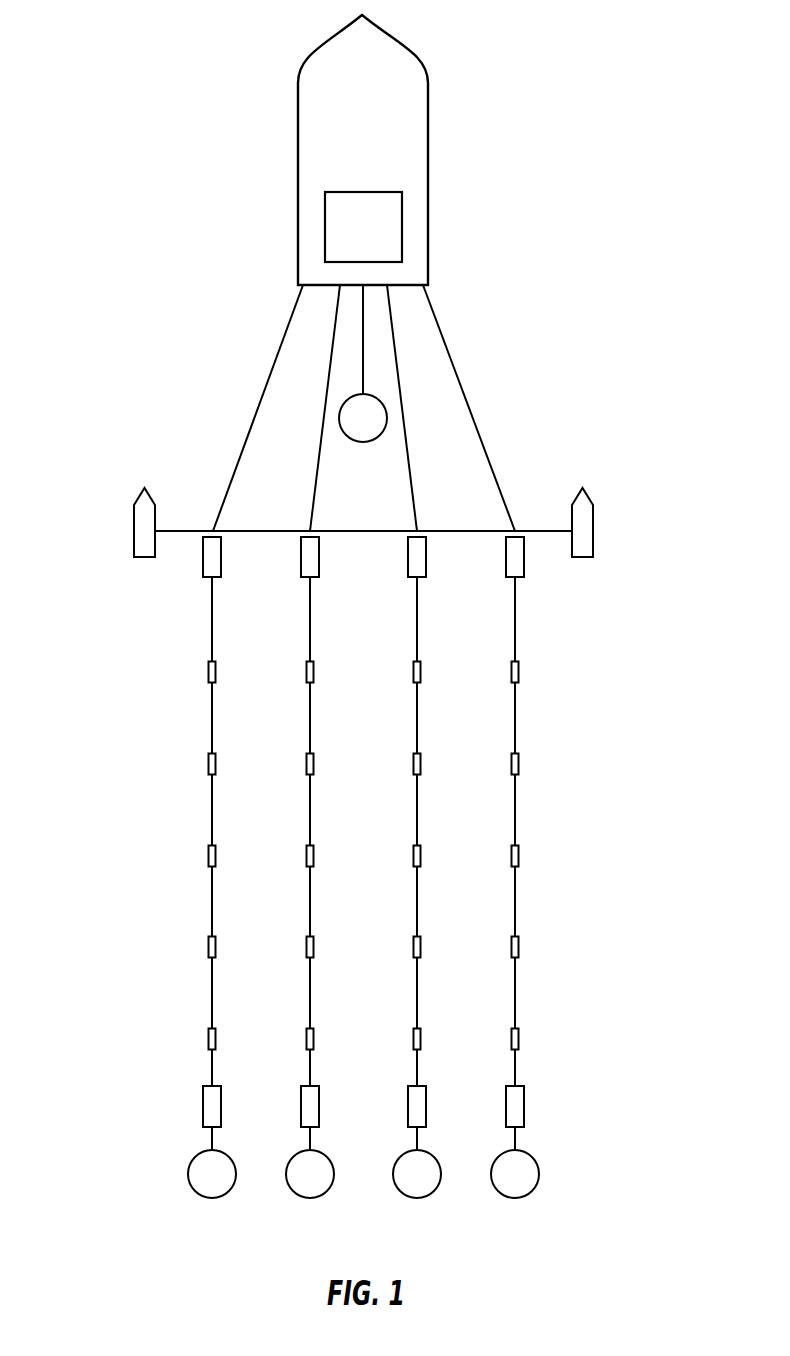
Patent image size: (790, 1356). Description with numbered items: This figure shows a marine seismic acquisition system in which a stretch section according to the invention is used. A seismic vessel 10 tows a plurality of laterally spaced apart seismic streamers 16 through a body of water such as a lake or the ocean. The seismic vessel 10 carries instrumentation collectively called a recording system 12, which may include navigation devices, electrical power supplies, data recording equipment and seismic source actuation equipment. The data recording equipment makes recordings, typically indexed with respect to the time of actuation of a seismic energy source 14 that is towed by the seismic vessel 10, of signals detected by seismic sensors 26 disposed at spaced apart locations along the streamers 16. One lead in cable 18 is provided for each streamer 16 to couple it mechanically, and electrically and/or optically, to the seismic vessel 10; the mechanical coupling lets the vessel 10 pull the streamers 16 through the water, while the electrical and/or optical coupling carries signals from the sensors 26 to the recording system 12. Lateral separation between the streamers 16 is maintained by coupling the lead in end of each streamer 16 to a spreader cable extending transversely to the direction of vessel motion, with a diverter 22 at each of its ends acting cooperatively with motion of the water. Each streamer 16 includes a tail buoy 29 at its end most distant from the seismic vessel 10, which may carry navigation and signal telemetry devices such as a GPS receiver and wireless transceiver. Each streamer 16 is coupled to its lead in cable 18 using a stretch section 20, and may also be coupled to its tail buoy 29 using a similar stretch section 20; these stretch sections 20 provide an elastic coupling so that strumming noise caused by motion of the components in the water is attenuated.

The seismic vessel 10 is at (428, 133).
The recording system 12 is at (402, 228).
The seismic energy source 14 is at (363, 417).
The seismic streamer 16 is at (212, 610).
The lead in cable 18 is at (251, 428).
The stretch section 20 is at (203, 568).
The diverter 22 is at (134, 515).
The seismic sensor 26 is at (208, 672).
The tail buoy 29 is at (212, 1198).